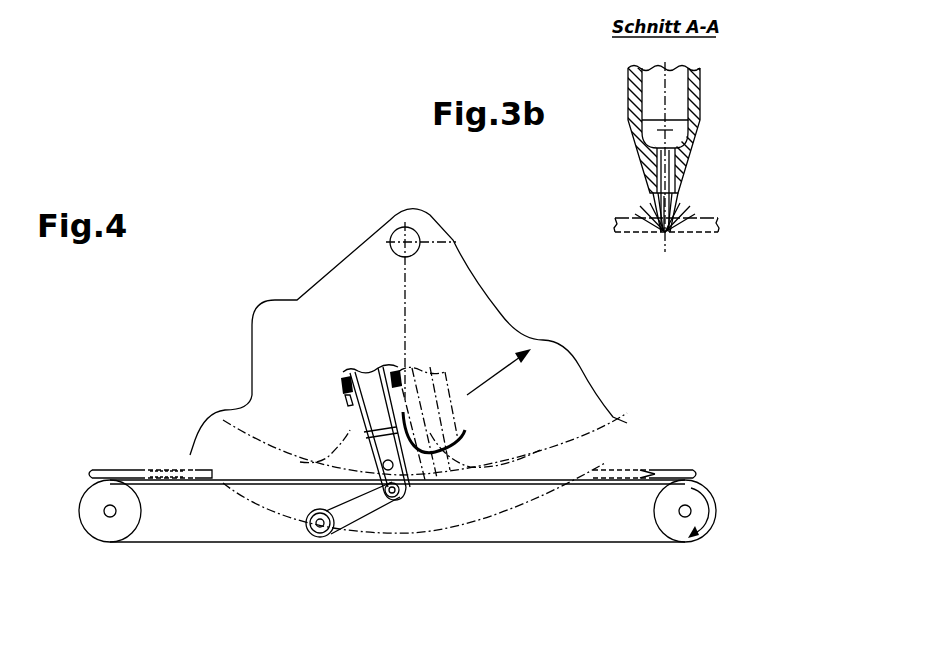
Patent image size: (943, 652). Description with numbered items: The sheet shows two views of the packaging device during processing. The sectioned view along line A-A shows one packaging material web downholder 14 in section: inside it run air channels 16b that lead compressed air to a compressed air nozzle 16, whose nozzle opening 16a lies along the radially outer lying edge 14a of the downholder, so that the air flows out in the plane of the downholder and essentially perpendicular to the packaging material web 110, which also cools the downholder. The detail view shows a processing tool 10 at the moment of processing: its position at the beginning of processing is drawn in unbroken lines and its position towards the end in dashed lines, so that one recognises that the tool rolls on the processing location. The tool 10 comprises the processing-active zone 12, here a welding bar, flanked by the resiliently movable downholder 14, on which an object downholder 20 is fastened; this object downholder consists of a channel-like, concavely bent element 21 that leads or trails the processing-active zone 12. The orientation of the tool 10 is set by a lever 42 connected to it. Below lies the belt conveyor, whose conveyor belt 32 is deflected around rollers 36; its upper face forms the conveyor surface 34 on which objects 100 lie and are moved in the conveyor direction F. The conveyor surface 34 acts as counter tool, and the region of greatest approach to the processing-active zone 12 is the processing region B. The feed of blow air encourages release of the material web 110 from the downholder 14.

In FIG. 4, the processing tool 10 is at (334, 358).
In FIG. 4, the processing-active zone 12 is at (405, 486).
In FIG. 3B, the packaging material web downholder 14 is at (622, 141).
In FIG. 3B, the radially outer lying edge 14a is at (665, 233).
In FIG. 3B, the compressed air nozzle 16 is at (698, 174).
In FIG. 3B, the nozzle opening 16a is at (672, 199).
In FIG. 3B, the air channel 16b is at (672, 130).
In FIG. 4, the object downholder 20 is at (473, 421).
In FIG. 4, the channel-like bent element 21 is at (466, 437).
In FIG. 4, the conveyor belt 32 is at (165, 542).
In FIG. 4, the conveyor surface 34 is at (620, 481).
In FIG. 4, the roller 36 is at (103, 527).
In FIG. 4, the lever 42 is at (350, 510).
In FIG. 4, the object 100 is at (104, 470).
In FIG. 3B, the packaging material web 110 is at (623, 212).
In FIG. 4, the packaging material web 110 is at (160, 470).
In FIG. 4, the processing region B is at (418, 507).
In FIG. 4, the conveyor direction F is at (650, 462).